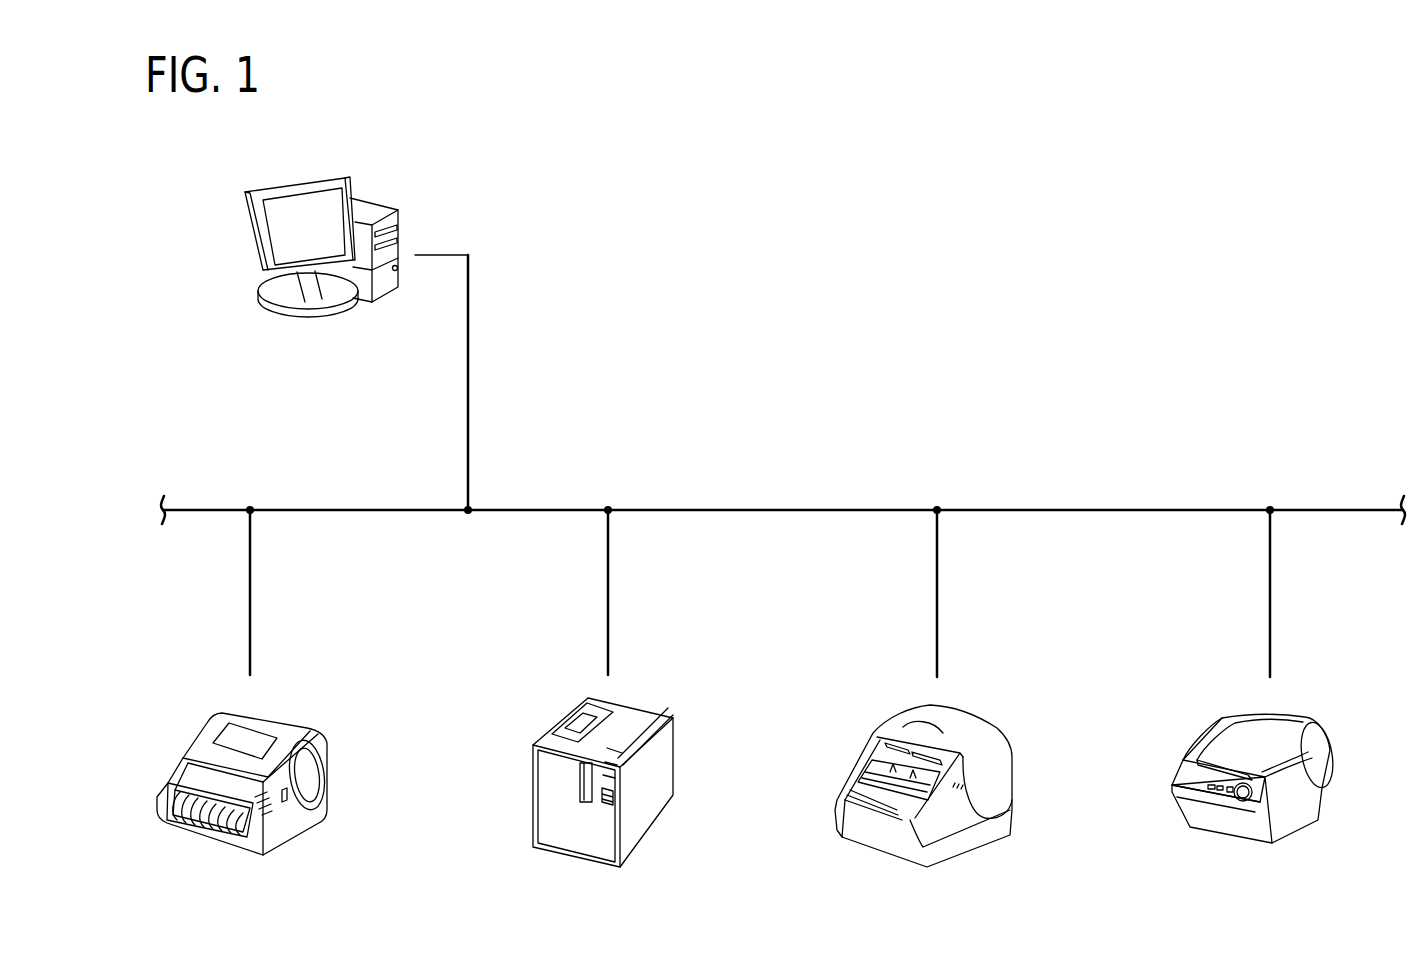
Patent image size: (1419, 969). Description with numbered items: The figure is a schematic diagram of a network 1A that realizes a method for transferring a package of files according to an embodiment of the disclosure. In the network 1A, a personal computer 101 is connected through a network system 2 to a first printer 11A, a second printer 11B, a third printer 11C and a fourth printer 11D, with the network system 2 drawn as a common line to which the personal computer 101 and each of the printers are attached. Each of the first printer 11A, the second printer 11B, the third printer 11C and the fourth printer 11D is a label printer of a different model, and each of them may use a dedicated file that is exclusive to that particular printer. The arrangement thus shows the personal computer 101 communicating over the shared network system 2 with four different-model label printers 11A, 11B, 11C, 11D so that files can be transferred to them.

The network 1A is at (1321, 220).
The network system 2 is at (1337, 510).
The personal computer 101 is at (399, 313).
The first printer 11A is at (287, 833).
The second printer 11B is at (648, 833).
The third printer 11C is at (987, 837).
The fourth printer 11D is at (1293, 833).